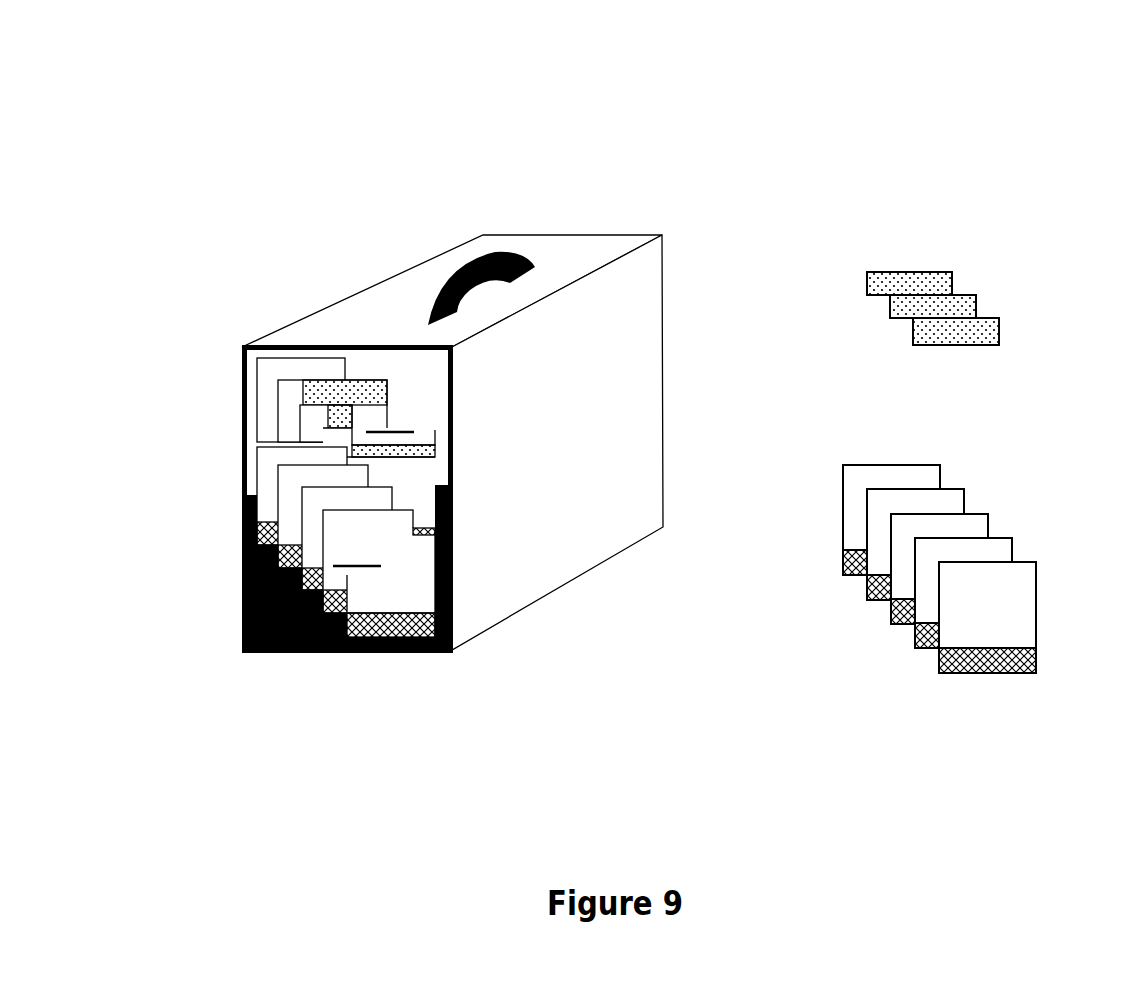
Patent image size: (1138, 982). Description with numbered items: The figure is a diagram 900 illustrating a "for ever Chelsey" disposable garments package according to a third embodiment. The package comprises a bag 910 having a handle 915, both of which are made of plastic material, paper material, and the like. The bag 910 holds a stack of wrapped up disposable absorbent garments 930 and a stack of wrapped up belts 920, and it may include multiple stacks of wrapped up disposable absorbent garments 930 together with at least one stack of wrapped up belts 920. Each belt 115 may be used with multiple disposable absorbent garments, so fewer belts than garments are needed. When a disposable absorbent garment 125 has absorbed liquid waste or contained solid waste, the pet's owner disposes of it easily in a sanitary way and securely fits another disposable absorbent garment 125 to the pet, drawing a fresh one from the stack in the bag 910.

The diagram 900 is at (161, 128).
The bag 910 is at (615, 232).
The handle 915 is at (482, 257).
The stack of wrapped up belts 920 is at (920, 265).
The stack of wrapped up disposable absorbent garments 930 is at (987, 540).
The belt 115 is at (919, 290).
The disposable absorbent garment 125 is at (937, 603).